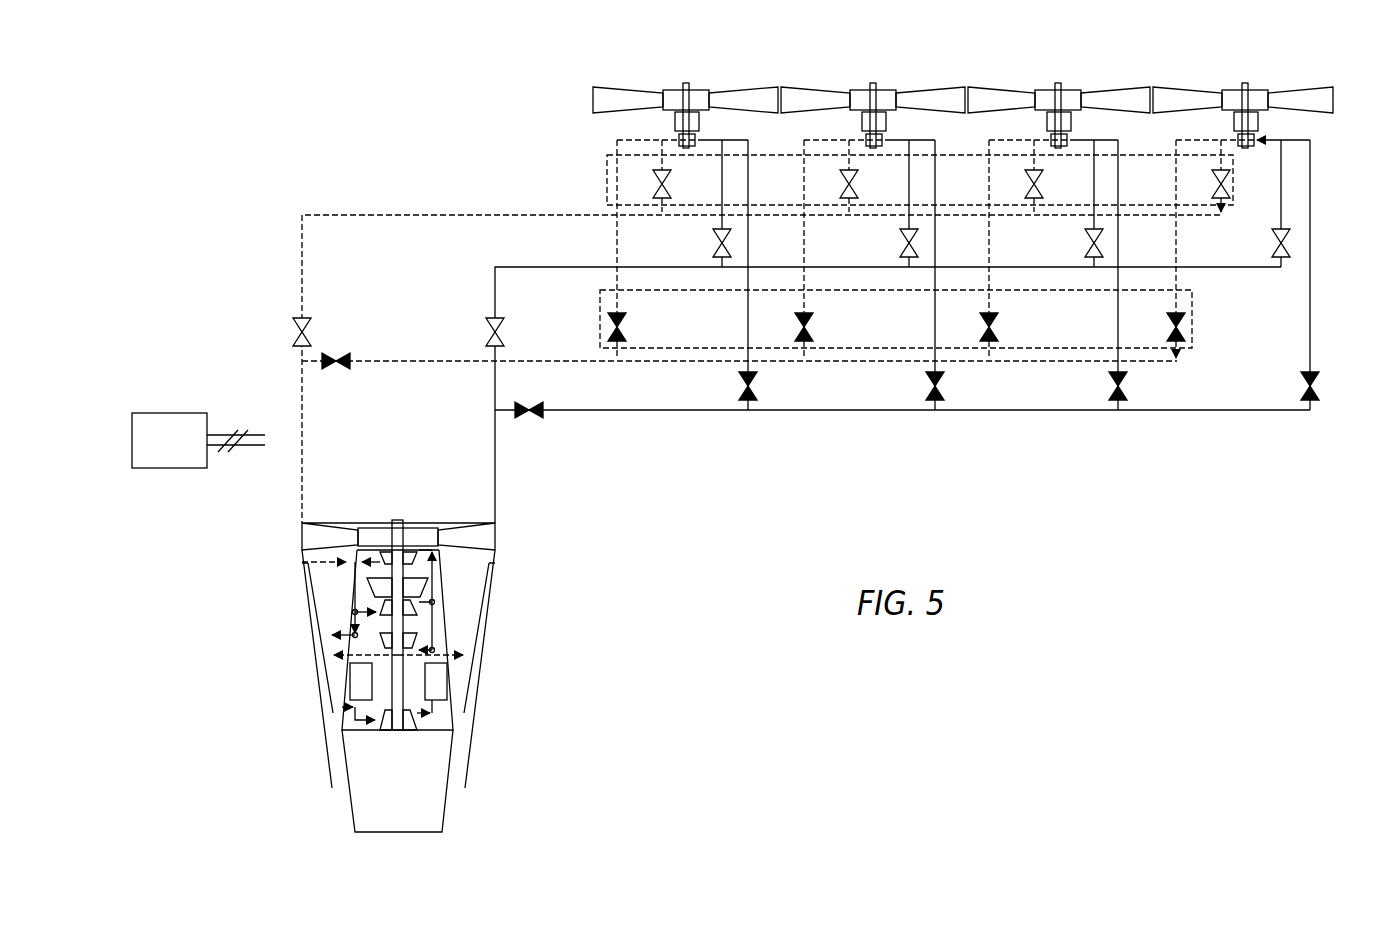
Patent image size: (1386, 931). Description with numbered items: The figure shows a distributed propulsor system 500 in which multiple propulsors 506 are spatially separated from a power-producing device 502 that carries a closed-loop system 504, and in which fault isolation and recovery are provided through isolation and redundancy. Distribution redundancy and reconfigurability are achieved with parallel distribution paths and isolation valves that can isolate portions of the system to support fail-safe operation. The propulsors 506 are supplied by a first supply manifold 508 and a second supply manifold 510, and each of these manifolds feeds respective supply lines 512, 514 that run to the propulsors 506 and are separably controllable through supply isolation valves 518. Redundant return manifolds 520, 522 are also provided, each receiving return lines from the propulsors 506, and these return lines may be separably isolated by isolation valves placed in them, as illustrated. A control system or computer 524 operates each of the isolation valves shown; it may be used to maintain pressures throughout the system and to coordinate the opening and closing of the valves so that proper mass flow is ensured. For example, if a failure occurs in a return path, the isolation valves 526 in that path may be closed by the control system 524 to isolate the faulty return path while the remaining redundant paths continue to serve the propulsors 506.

The distributed propulsor system 500 is at (1236, 512).
The power-producing device 502 is at (449, 676).
The closed-loop system 504 is at (452, 607).
The propulsors 506 is at (741, 80).
The first supply manifold 508 is at (610, 412).
The second supply manifold 510 is at (538, 267).
The supply lines 512 is at (748, 366).
The supply lines 514 is at (617, 276).
The supply isolation valves 518 is at (660, 150).
The return manifold 520 is at (392, 358).
The return manifold 522 is at (301, 263).
The control system 524 is at (170, 468).
The isolation valves 526 is at (607, 180).